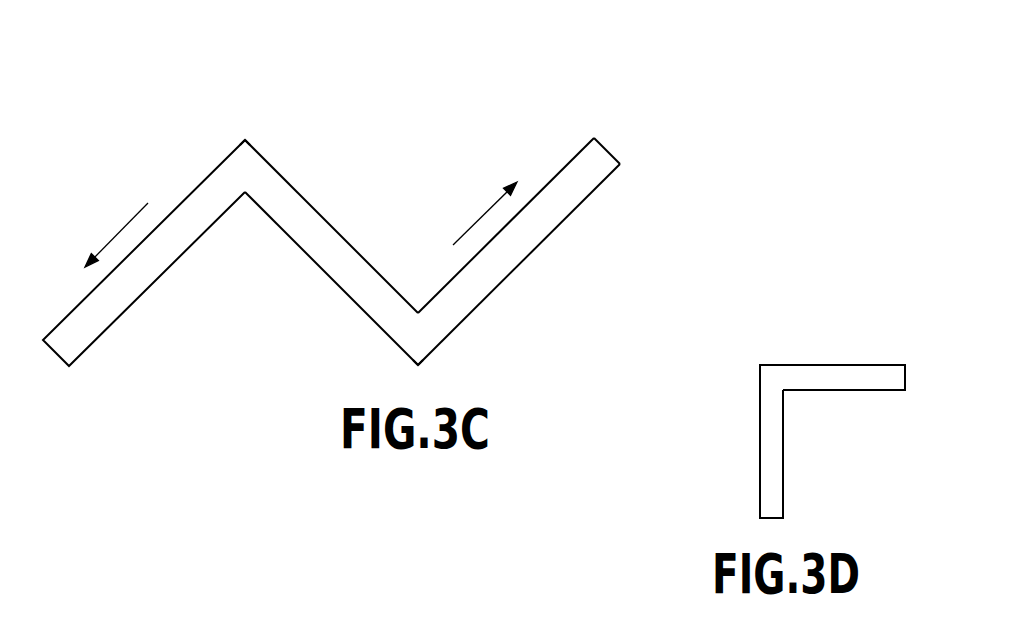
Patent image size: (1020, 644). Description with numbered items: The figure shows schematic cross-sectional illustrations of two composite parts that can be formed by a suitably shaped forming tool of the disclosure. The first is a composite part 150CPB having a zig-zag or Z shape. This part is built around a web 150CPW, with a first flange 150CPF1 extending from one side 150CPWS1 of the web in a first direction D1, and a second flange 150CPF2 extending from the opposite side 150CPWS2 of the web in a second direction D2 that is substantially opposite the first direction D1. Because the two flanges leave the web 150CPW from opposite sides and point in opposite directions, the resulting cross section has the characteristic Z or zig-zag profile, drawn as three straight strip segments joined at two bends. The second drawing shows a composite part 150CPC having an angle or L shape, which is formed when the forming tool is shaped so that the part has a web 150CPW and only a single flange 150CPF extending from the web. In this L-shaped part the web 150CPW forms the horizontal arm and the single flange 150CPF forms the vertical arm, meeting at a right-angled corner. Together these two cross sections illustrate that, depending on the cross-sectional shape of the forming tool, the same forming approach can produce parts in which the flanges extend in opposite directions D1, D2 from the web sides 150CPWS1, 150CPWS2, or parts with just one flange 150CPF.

In FIG. 3C, the second web side 150CPWS2 is at (236, 119).
In FIG. 3C, the first web side 150CPWS1 is at (468, 349).
In FIG. 3C, the web 150CPW is at (331, 242).
In FIG. 3D, the web 150CPW is at (848, 382).
In FIG. 3C, the composite part having a zig-zag or Z shape 150CPB is at (605, 150).
In FIG. 3C, the first flange 150CPF1 is at (518, 244).
In FIG. 3C, the second flange 150CPF2 is at (123, 301).
In FIG. 3D, the composite part having an angle or L shape 150CPC is at (800, 365).
In FIG. 3D, the flange 150CPF is at (777, 500).
In FIG. 3C, the first direction D1 is at (487, 212).
In FIG. 3C, the second direction D2 is at (117, 235).